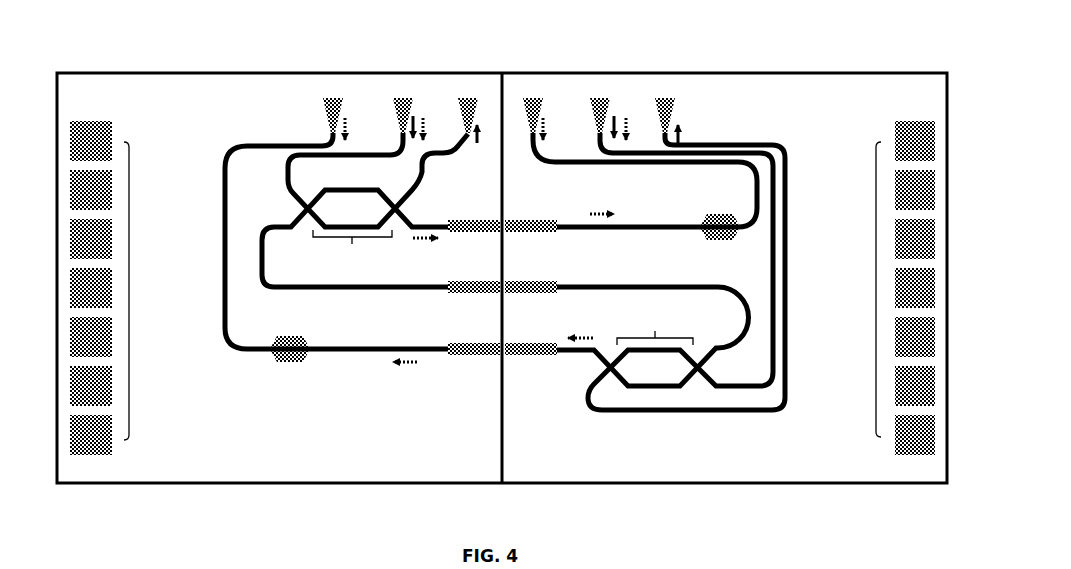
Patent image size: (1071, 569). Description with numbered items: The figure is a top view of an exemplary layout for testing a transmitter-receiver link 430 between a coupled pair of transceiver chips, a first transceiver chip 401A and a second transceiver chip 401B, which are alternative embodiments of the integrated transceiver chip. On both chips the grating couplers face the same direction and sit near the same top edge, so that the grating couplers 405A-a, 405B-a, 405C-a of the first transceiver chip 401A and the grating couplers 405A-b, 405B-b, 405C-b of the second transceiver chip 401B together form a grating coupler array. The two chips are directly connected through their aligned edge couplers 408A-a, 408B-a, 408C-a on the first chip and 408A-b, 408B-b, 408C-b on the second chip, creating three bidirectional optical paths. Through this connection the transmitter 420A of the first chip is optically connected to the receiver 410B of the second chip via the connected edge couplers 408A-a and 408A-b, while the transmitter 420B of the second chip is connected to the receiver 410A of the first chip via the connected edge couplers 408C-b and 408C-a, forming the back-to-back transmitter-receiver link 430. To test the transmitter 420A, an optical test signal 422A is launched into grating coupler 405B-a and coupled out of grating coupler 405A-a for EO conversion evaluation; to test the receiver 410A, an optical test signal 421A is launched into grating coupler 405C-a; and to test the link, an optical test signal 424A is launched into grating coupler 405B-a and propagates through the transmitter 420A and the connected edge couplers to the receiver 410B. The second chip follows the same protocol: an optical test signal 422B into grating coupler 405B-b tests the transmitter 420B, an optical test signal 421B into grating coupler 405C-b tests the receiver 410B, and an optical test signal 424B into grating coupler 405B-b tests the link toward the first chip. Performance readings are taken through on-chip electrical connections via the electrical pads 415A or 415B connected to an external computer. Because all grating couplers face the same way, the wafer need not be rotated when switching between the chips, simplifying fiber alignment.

The transmitter-receiver link 430 is at (866, 41).
The first transceiver chip 401A is at (468, 466).
The second transceiver chip 401B is at (569, 466).
The electrical pads 415A is at (129, 290).
The electrical pads 415B is at (876, 290).
The grating coupler 405A-a is at (463, 100).
The grating coupler 405B-a is at (399, 100).
The grating coupler 405C-a is at (332, 100).
The grating coupler 405A-b is at (672, 103).
The grating coupler 405B-b is at (600, 100).
The grating coupler 405C-b is at (532, 100).
The edge coupler 408A-a is at (455, 220).
The edge coupler 408B-a is at (456, 281).
The edge coupler 408C-a is at (456, 343).
The edge coupler 408A-b is at (519, 220).
The edge coupler 408B-b is at (556, 266).
The edge coupler 408C-b is at (522, 343).
The receiver 410A is at (278, 364).
The receiver 410B is at (702, 236).
The transmitter 420A is at (352, 233).
The transmitter 420B is at (655, 343).
The optical test signal 421A is at (349, 135).
The optical test signal 421B is at (546, 136).
The optical test signal 422A is at (411, 143).
The optical test signal 422B is at (616, 128).
The optical test signal 424A is at (421, 125).
The optical test signal 424B is at (628, 128).